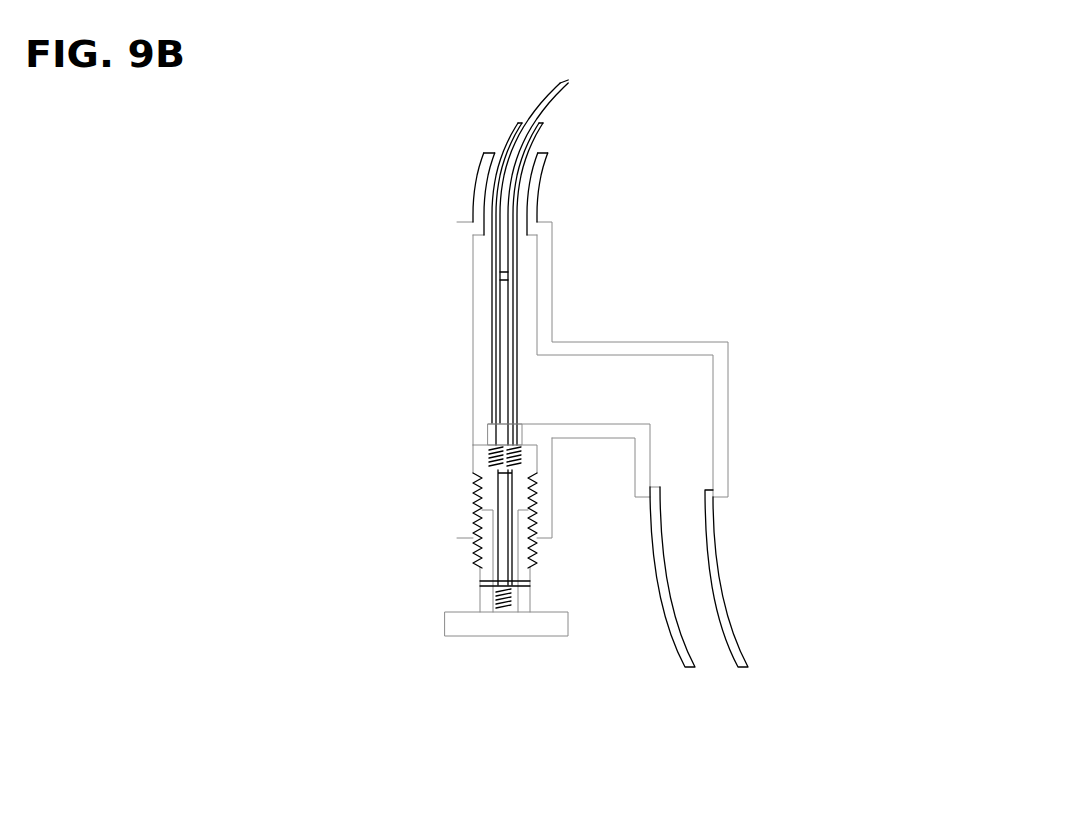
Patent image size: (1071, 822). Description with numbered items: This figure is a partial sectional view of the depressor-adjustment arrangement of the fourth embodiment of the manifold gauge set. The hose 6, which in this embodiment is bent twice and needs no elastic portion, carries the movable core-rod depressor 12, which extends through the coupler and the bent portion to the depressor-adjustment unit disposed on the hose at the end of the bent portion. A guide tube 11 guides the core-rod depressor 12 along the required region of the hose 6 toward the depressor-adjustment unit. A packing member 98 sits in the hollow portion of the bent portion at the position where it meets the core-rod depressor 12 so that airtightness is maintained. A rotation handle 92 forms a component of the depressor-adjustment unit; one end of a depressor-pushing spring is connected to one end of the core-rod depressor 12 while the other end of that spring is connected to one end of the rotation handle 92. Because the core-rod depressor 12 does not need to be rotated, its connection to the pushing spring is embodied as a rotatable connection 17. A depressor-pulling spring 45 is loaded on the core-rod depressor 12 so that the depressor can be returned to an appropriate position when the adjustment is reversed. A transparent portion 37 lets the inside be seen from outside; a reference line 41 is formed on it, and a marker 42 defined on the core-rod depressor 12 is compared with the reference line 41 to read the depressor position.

The hose 6 is at (548, 182).
The guide tube 11 is at (545, 132).
The core-rod depressor 12 is at (582, 83).
The rotatable connection 17 is at (500, 278).
The packing member 98 is at (477, 433).
The depressor-pulling spring 45 is at (525, 460).
The marker 42 is at (497, 580).
The reference line 41 is at (480, 583).
The transparent portion 37 is at (438, 598).
The rotation handle 92 is at (510, 657).